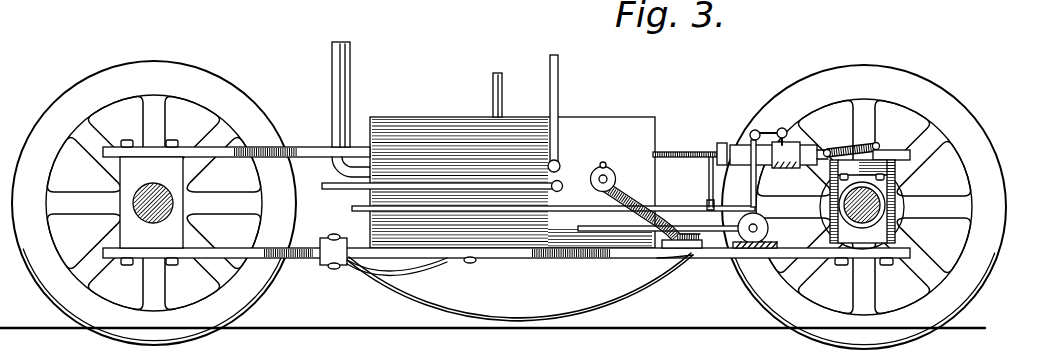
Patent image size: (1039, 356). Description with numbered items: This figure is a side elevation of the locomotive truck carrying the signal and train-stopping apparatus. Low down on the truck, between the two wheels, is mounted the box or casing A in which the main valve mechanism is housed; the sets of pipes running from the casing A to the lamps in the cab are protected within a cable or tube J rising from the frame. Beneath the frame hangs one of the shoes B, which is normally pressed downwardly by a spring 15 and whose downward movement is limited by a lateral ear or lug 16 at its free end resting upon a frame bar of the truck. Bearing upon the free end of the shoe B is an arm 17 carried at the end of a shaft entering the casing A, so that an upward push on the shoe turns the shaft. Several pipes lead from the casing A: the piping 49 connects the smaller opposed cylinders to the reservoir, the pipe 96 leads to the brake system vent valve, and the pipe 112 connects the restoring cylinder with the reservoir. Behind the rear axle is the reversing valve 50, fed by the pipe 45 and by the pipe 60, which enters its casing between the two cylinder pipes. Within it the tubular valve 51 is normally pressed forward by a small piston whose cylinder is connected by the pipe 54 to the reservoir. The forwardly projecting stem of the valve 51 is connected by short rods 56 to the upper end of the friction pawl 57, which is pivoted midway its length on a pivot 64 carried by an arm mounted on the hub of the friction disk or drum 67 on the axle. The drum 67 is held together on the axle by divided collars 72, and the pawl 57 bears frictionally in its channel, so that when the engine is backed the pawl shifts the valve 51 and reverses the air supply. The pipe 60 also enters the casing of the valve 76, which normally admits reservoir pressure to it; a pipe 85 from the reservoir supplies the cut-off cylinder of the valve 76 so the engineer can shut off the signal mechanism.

The cable or tube J is at (332, 110).
The pipe 112 is at (495, 90).
The pipe 96 is at (558, 108).
The box or casing A is at (558, 138).
The piping 49 is at (507, 185).
The arm 17 is at (630, 187).
The pipe 54 is at (555, 208).
The pipe 45 is at (673, 151).
The reversing valve 50 is at (740, 143).
The pipe 60 is at (768, 130).
The tubular valve 51 is at (789, 160).
The short rods 56 is at (843, 146).
The friction pawl 57 is at (877, 142).
The pivot 64 is at (886, 150).
The friction disk or drum 67 is at (903, 193).
The divided collars 72 is at (895, 218).
The valve 76 is at (770, 228).
The pipe 85 is at (714, 214).
The springs 15 is at (447, 265).
The lateral ear or lug 16 is at (660, 253).
The shoes B is at (531, 313).